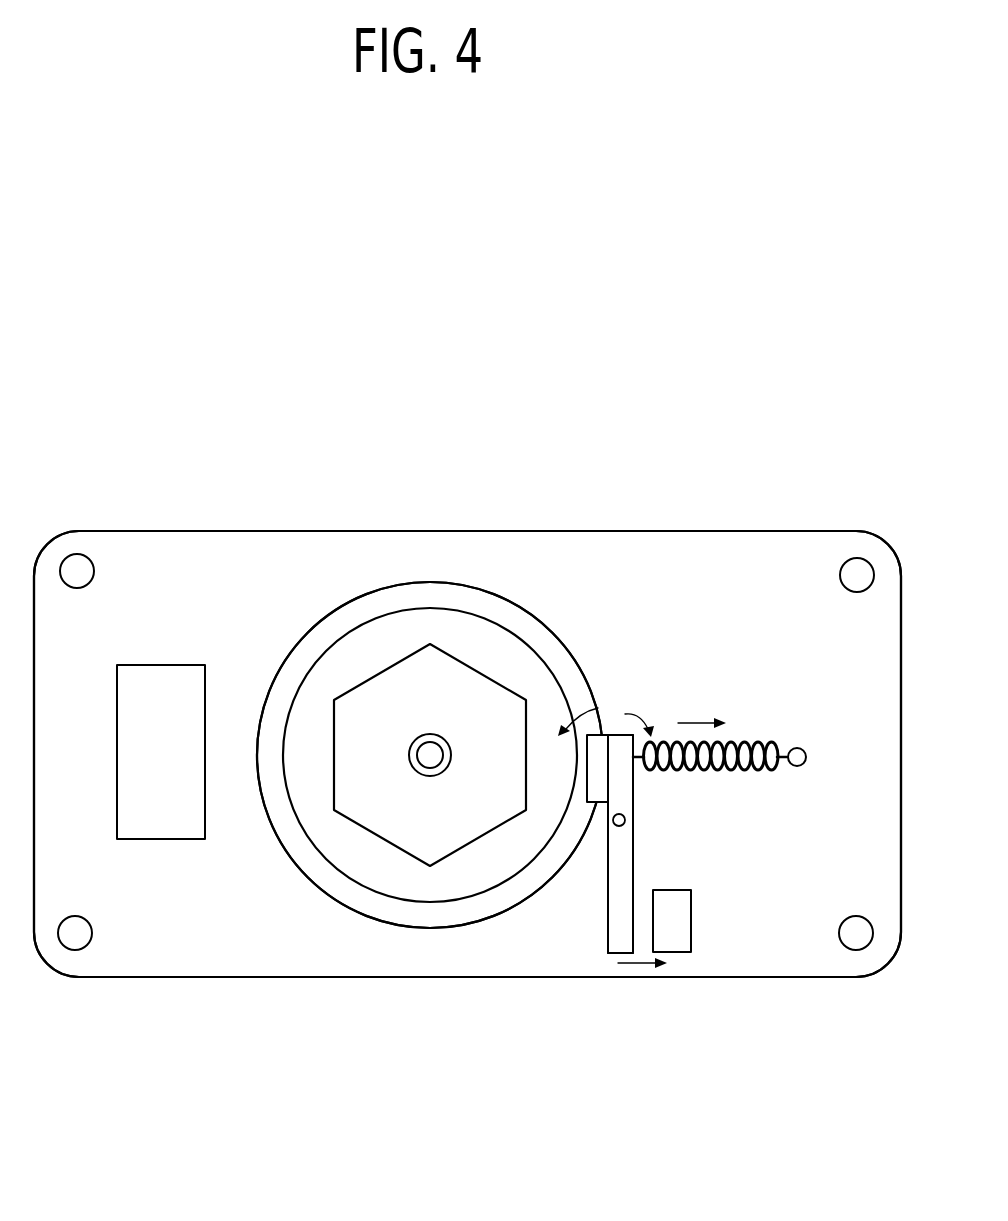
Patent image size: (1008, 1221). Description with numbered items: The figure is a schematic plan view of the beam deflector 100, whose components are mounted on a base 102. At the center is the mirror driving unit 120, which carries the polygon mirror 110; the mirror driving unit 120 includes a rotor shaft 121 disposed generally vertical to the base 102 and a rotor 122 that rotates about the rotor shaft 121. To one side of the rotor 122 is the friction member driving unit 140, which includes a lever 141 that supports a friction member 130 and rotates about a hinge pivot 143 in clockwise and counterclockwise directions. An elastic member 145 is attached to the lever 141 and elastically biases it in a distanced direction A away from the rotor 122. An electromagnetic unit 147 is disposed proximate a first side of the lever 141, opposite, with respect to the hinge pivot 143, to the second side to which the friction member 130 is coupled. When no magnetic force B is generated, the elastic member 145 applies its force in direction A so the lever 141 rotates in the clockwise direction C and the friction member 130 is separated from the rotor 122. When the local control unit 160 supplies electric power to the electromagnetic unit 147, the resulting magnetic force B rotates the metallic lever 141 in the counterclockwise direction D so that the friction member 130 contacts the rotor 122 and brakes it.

The beam deflector 100 is at (700, 512).
The base 102 is at (237, 935).
The polygon mirror 110 is at (373, 707).
The mirror driving unit 120 is at (353, 938).
The rotor shaft 121 is at (435, 753).
The rotor 122 is at (535, 637).
The friction member 130 is at (598, 790).
The friction member driving unit 140 is at (598, 950).
The lever 141 is at (620, 862).
The hinge pivot 143 is at (625, 820).
The elastic member 145 is at (772, 746).
The electromagnetic unit 147 is at (677, 921).
The local control unit 160 is at (157, 823).
The distanced direction A is at (699, 722).
The magnetic force B is at (633, 968).
The clockwise direction C is at (632, 712).
The counterclockwise direction D is at (586, 705).